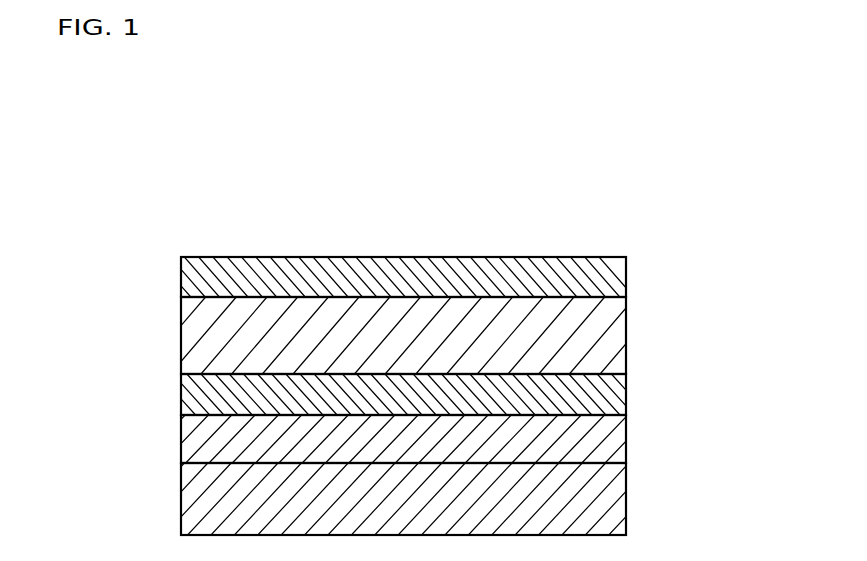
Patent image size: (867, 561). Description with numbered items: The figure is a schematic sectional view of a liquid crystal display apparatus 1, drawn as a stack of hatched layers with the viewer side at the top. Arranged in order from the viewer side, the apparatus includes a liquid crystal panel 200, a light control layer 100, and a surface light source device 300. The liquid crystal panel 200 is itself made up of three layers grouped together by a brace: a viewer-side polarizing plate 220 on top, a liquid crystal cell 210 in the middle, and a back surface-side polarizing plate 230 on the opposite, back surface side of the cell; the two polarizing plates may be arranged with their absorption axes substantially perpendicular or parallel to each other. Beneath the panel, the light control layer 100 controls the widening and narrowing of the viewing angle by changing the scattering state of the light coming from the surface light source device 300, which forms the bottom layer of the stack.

The liquid crystal display apparatus 1 is at (467, 344).
The liquid crystal panel 200 is at (760, 282).
The viewer-side polarizing plate 220 is at (626, 280).
The liquid crystal cell 210 is at (626, 328).
The back surface-side polarizing plate 230 is at (626, 383).
The light control layer 100 is at (626, 442).
The surface light source device 300 is at (626, 495).